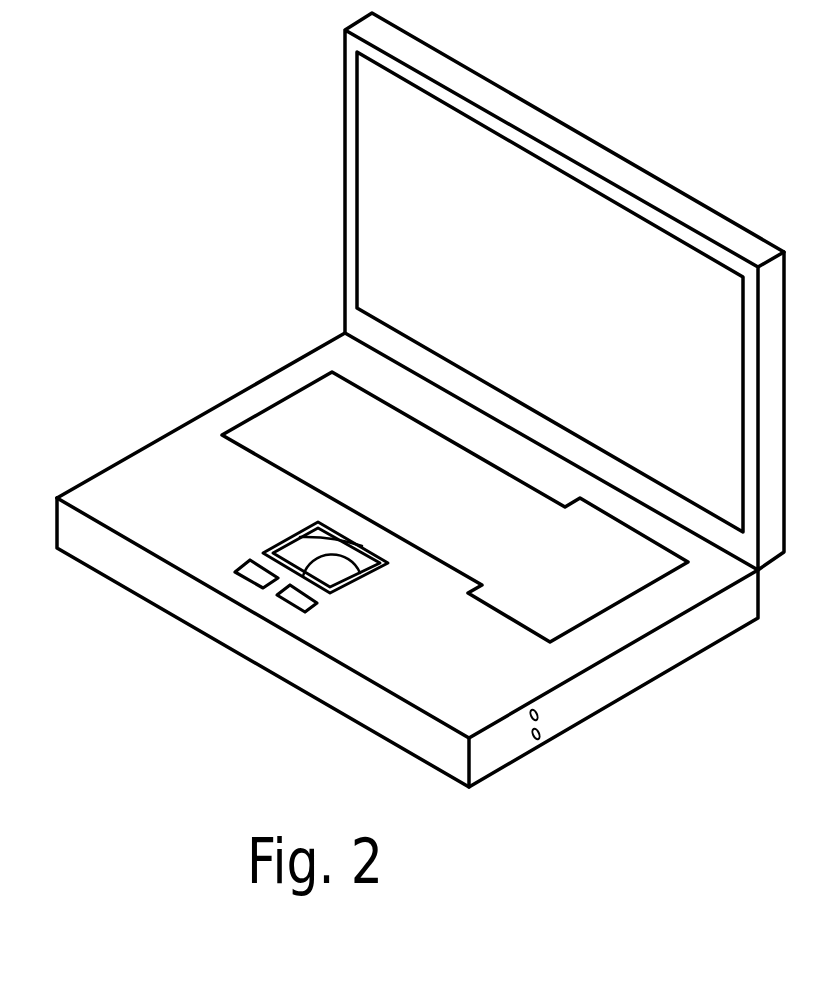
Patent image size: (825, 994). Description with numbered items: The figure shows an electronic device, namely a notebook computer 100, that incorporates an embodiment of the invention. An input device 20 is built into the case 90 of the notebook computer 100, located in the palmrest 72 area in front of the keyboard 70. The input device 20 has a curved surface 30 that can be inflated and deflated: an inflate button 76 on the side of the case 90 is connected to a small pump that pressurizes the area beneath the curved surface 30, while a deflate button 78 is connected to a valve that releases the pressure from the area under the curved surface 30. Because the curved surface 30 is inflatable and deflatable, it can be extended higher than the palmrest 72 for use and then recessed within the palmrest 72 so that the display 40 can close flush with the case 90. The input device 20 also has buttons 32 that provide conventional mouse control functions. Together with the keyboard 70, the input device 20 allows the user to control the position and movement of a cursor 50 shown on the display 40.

The notebook computer 100 is at (617, 134).
The display 40 is at (717, 285).
The cursor 50 is at (569, 277).
The keyboard 70 is at (283, 423).
The input device 20 is at (276, 544).
The curved surface 30 is at (338, 578).
The buttons 32 is at (290, 607).
The palmrest 72 is at (395, 655).
The inflate button 76 is at (540, 721).
The deflate button 78 is at (538, 747).
The case 90 is at (668, 656).